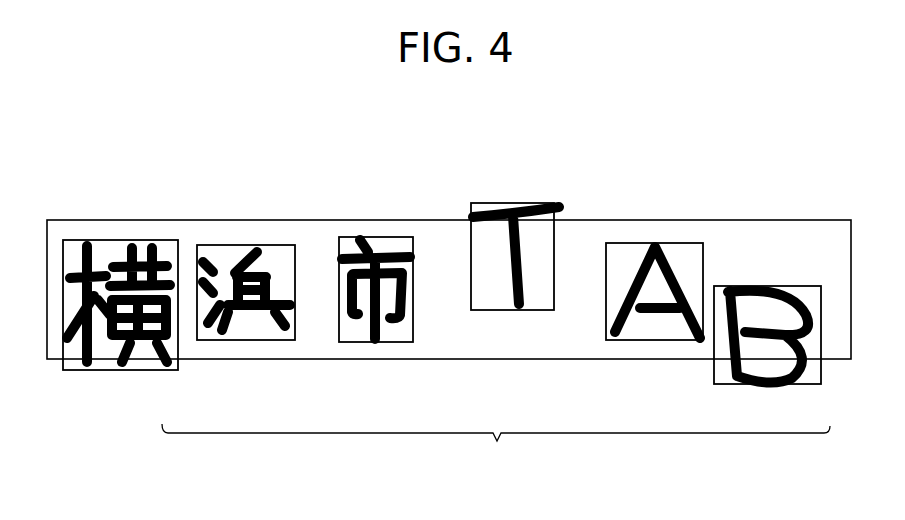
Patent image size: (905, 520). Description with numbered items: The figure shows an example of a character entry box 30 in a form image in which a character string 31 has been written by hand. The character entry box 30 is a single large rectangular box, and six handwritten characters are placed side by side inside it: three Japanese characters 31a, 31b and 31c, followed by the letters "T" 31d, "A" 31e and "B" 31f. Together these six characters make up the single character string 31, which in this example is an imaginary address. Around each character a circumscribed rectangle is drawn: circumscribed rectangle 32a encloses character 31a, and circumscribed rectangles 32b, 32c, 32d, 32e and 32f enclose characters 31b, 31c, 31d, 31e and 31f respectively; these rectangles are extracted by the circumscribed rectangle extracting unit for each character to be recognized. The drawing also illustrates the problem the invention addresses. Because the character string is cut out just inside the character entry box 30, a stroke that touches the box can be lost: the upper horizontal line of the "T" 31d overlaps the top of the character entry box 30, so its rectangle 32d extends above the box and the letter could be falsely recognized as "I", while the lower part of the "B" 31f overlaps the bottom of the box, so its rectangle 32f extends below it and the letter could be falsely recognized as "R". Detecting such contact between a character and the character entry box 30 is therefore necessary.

The character entry box 30 is at (452, 220).
The character string 31 is at (496, 447).
The character 31a is at (145, 359).
The character 31b is at (259, 329).
The character 31c is at (390, 333).
The character "T" 31d is at (506, 293).
The character "A" 31e is at (656, 328).
The character "B" 31f is at (763, 349).
The circumscribed rectangle 32a is at (127, 231).
The circumscribed rectangle 32b is at (255, 236).
The circumscribed rectangle 32c is at (379, 227).
The circumscribed rectangle 32d is at (531, 191).
The circumscribed rectangle 32e is at (657, 234).
The circumscribed rectangle 32f is at (770, 274).